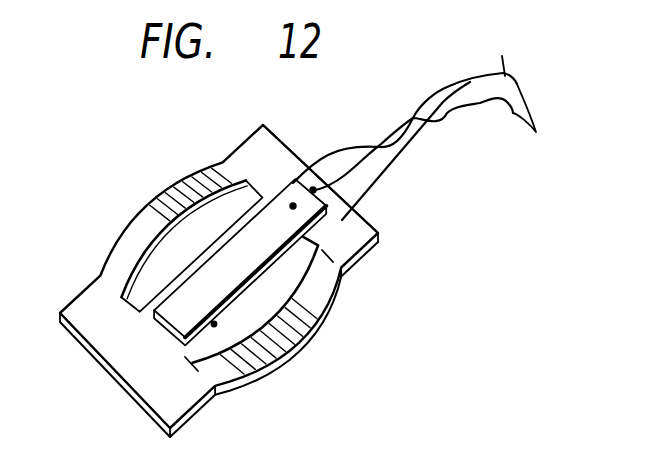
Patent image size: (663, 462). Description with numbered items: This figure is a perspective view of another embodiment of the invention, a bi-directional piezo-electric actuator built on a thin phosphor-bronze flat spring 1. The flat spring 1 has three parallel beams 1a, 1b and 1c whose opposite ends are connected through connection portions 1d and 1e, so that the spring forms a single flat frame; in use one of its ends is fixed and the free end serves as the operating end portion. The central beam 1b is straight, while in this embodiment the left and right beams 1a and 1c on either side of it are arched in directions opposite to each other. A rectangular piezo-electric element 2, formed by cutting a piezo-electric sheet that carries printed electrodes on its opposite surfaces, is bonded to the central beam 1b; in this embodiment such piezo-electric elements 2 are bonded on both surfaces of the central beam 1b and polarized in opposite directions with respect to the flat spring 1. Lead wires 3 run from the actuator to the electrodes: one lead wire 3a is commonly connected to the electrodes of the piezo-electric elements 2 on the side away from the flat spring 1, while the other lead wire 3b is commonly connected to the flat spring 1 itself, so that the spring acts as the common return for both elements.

The flat spring 1 is at (204, 168).
The beam 1a is at (148, 216).
The central beam 1b is at (214, 325).
The beam 1c is at (268, 337).
The connection portion 1d is at (293, 206).
The connection portion 1e is at (122, 358).
The piezo-electric element 2 is at (263, 244).
The lead wires 3 is at (447, 122).
The lead wire 3a is at (534, 128).
The lead wire 3b is at (504, 72).